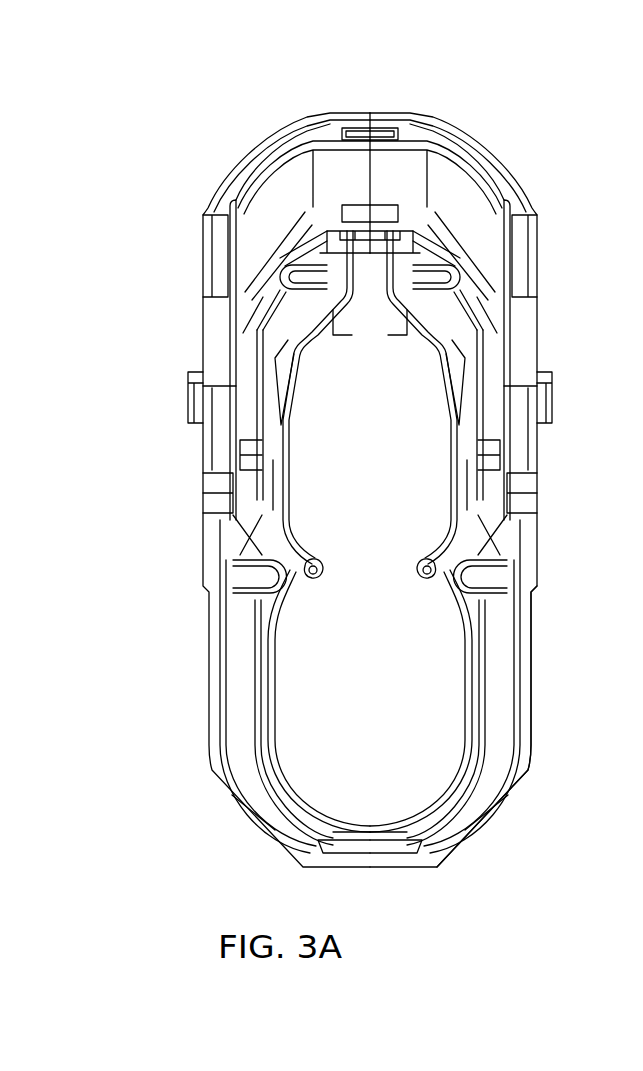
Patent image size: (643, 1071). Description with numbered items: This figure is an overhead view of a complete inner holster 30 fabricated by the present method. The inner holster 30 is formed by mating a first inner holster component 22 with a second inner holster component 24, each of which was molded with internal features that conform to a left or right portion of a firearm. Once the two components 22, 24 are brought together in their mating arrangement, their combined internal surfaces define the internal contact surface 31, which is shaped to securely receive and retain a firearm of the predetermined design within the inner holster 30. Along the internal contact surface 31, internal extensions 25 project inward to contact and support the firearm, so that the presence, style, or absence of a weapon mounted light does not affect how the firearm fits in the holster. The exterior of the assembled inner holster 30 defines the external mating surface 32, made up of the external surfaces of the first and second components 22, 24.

The first inner holster component 22 is at (241, 161).
The second inner holster component 24 is at (492, 158).
The external mating surface 32 is at (268, 212).
The internal extensions 25 is at (427, 552).
The inner holster 30 is at (365, 513).
The internal contact surface 31 is at (642, 802).